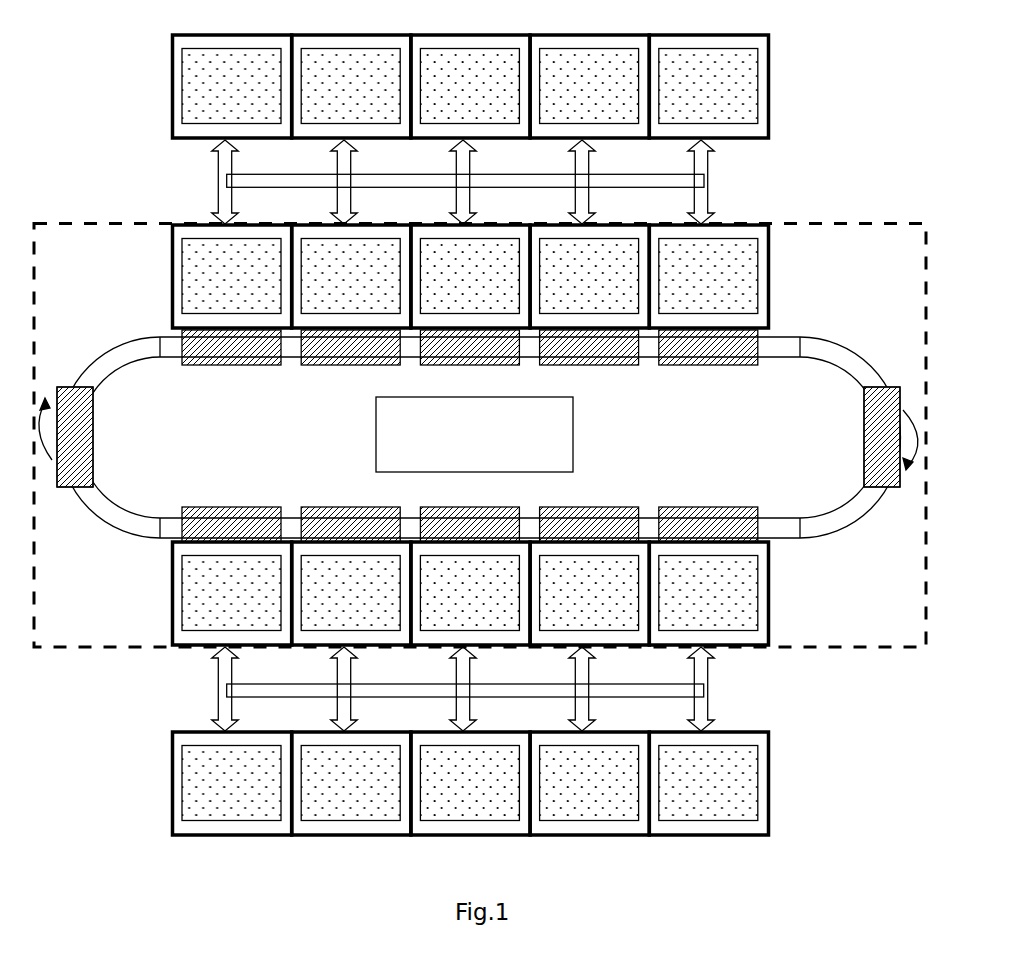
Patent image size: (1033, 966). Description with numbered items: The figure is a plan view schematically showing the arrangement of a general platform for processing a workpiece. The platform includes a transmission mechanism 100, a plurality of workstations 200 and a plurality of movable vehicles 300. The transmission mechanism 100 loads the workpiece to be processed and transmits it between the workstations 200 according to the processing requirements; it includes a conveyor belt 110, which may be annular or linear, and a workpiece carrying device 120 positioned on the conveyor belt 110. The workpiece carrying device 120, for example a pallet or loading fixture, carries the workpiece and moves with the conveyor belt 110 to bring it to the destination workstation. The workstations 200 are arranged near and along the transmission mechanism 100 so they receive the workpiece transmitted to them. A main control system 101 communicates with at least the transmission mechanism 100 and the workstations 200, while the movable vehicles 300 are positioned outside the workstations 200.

The transmission mechanism 100 is at (844, 537).
The main control system 101 is at (474, 434).
The conveyor belt 110 is at (828, 342).
The workpiece carrying device 120 is at (230, 357).
The workstation 200 is at (172, 292).
The movable vehicle 300 is at (187, 262).